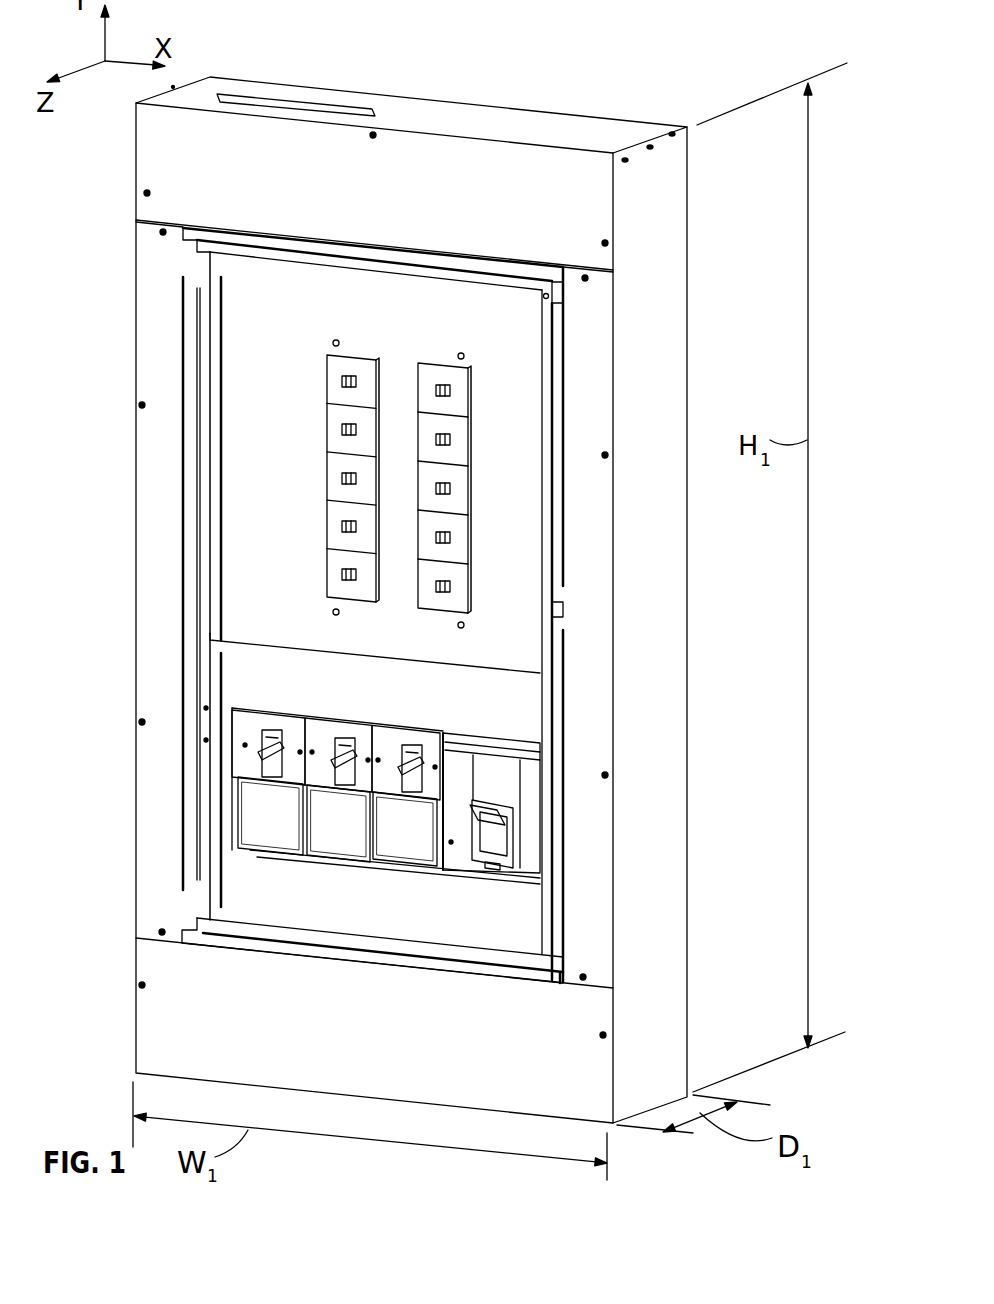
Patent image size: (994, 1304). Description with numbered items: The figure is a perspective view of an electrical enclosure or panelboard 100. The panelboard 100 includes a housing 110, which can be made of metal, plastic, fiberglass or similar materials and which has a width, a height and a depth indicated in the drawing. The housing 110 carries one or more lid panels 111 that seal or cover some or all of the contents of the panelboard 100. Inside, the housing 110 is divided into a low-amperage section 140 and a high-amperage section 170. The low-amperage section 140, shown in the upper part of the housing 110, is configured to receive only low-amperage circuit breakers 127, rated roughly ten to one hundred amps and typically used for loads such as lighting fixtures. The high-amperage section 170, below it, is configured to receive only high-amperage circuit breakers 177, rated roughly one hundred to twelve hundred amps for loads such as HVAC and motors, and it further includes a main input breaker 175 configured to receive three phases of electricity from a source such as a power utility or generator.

The panelboard 100 is at (673, 92).
The housing 110 is at (543, 203).
The lid panels 111 is at (158, 188).
The low-amperage circuit breakers 127 is at (452, 382).
The low-amperage section 140 is at (496, 610).
The high-amperage section 170 is at (222, 811).
The main input breaker 175 is at (505, 782).
The high-amperage circuit breakers 177 is at (323, 728).